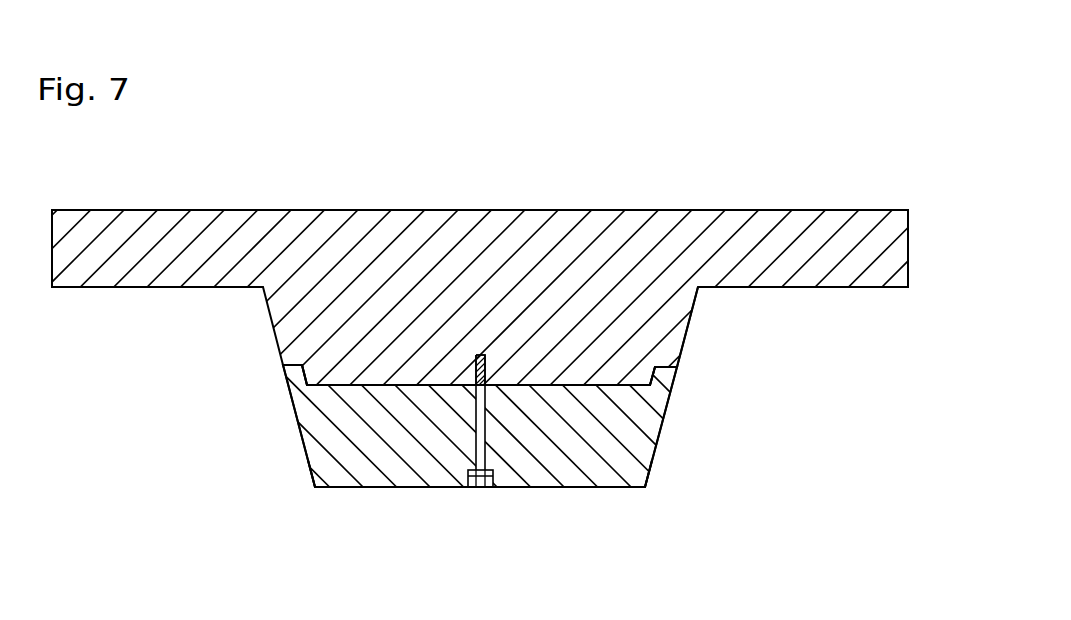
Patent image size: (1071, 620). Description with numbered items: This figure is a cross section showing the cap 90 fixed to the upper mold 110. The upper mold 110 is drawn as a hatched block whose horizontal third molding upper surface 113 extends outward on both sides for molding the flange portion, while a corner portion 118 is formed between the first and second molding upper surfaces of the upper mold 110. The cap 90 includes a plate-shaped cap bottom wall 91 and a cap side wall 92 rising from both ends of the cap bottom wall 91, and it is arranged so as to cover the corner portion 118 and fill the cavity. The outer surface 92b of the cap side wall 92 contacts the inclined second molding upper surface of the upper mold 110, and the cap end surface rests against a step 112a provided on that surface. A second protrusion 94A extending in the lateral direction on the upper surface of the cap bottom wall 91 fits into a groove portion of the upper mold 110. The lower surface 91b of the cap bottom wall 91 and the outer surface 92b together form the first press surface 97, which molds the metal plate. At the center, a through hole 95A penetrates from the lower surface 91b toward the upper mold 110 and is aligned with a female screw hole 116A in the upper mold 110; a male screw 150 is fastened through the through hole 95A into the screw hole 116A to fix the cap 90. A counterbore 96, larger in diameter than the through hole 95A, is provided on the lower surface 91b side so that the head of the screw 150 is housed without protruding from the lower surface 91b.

The upper mold 110 is at (498, 221).
The third molding upper surface 113 is at (130, 288).
The corner portion 118 is at (628, 468).
The through hole 95A is at (468, 382).
The screw hole 116A is at (485, 357).
The screw 150 is at (477, 488).
The counterbore 96 is at (473, 488).
The cap 90 is at (660, 423).
The step 112a is at (282, 374).
The second protrusion 94A is at (353, 430).
The cap side wall 92 is at (313, 452).
The outer surface of cap side wall 92b is at (310, 472).
The cap bottom wall 91 is at (577, 477).
The lower surface of cap bottom wall 91b is at (532, 488).
The first press surface 97 is at (388, 493).